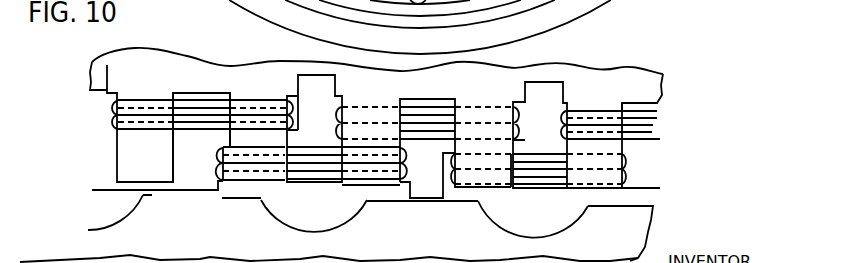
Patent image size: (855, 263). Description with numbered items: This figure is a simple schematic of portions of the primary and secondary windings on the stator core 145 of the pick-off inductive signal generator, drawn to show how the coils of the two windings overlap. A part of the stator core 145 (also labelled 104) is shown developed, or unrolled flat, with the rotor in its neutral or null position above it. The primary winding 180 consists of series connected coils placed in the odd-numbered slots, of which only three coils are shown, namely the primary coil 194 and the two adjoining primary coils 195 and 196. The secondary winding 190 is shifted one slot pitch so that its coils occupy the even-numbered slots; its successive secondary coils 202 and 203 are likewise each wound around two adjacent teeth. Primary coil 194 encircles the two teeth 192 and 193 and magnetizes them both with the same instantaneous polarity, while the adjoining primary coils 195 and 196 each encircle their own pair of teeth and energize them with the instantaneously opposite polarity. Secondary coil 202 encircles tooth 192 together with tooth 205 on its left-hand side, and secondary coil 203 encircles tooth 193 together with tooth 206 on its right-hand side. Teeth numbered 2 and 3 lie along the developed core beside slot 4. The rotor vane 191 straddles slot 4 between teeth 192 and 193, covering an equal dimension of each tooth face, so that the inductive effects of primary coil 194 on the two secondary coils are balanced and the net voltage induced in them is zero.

The stator core body 104 is at (655, 84).
The stator core 145 is at (669, 92).
The stator tooth 2 is at (207, 150).
The stator tooth 3 is at (322, 141).
The slot 4 is at (433, 161).
The primary winding 180 is at (112, 111).
The secondary winding 190 is at (221, 160).
The primary coil 195 is at (241, 105).
The primary coil 194 is at (432, 115).
The primary coil 196 is at (585, 108).
The tooth 192 is at (352, 188).
The tooth 193 is at (492, 188).
The tooth 206 is at (580, 190).
The tooth 205 is at (242, 181).
The secondary coil 202 is at (267, 180).
The secondary coil 203 is at (493, 176).
The vane 191 is at (383, 210).